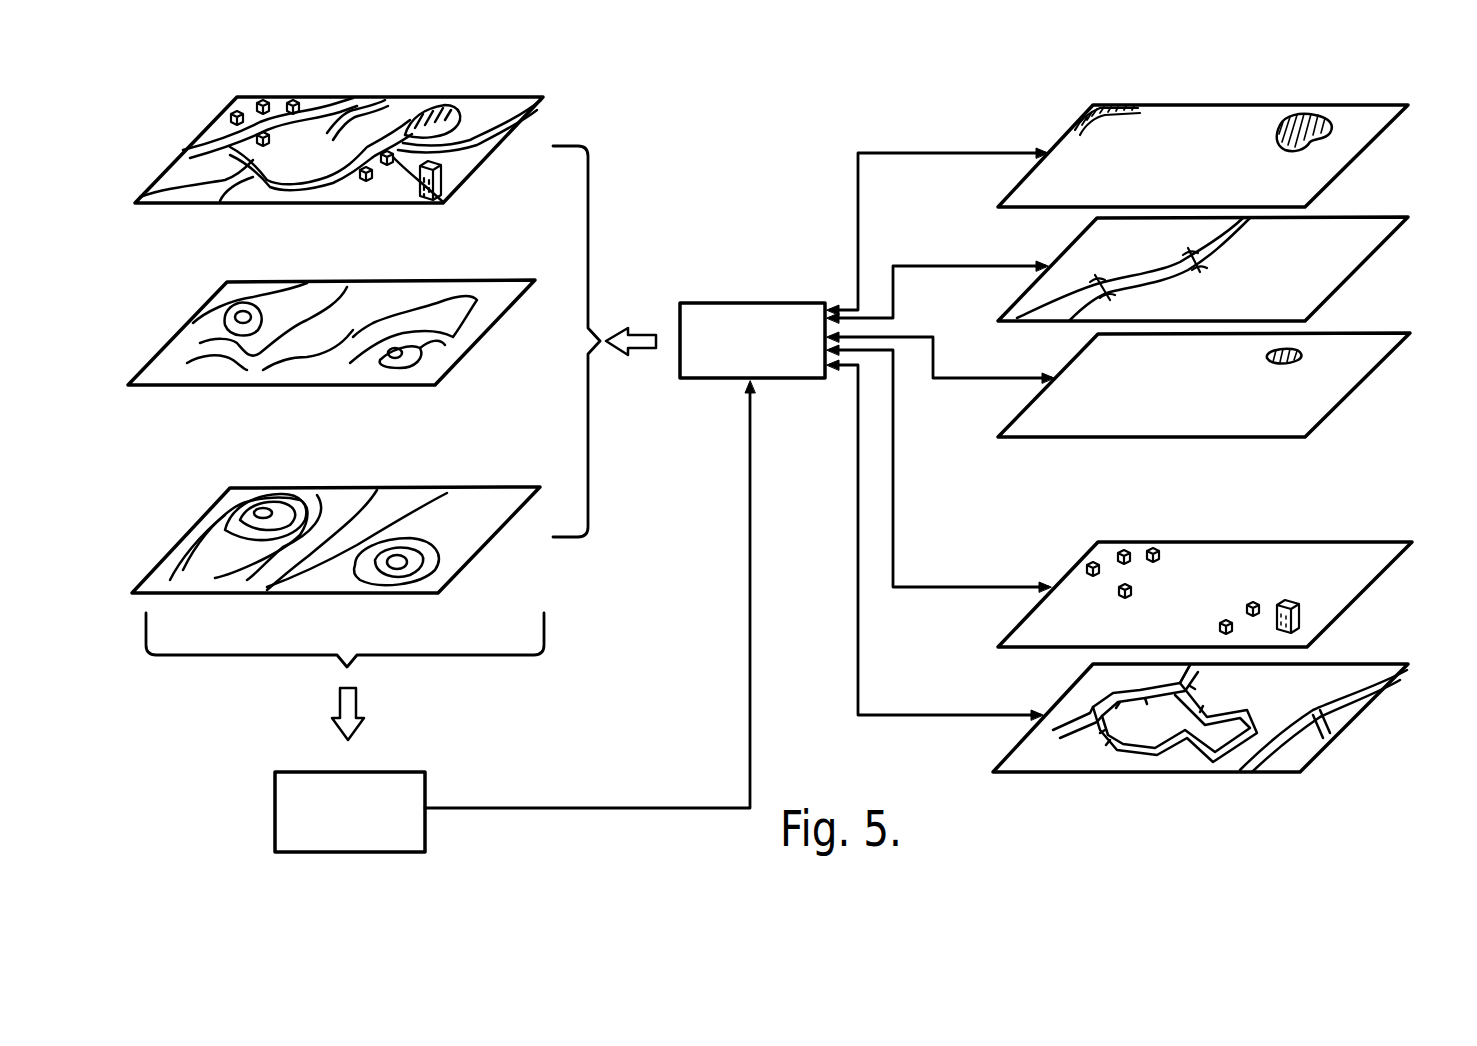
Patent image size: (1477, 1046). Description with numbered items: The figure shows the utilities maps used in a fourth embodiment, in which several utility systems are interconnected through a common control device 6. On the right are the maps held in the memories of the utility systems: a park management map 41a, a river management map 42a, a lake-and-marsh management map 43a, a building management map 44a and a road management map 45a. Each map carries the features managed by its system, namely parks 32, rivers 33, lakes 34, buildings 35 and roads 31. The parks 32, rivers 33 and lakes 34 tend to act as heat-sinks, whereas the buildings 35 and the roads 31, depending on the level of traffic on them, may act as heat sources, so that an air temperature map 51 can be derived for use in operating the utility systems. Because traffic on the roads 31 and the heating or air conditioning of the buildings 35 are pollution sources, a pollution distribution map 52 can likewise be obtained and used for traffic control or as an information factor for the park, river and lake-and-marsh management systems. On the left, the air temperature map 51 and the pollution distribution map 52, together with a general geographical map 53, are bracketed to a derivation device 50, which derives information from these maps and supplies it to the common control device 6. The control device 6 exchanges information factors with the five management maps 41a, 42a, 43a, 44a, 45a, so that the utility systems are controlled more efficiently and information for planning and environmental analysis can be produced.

The common control device 6 is at (792, 362).
The derivation device 50 is at (413, 827).
The air temperature map 51 is at (205, 512).
The pollution distribution map 52 is at (196, 316).
The general geographical map 53 is at (203, 140).
The park management map 41a is at (1224, 130).
The river management map 42a is at (1225, 269).
The lake-and-marsh management map 43a is at (1226, 385).
The building management map 44a is at (1227, 594).
The road management map 45a is at (1222, 745).
The roads 31 is at (1255, 748).
The parks 32 is at (1313, 107).
The rivers 33 is at (1160, 268).
The lakes 34 is at (1278, 368).
The buildings 35 is at (1115, 593).